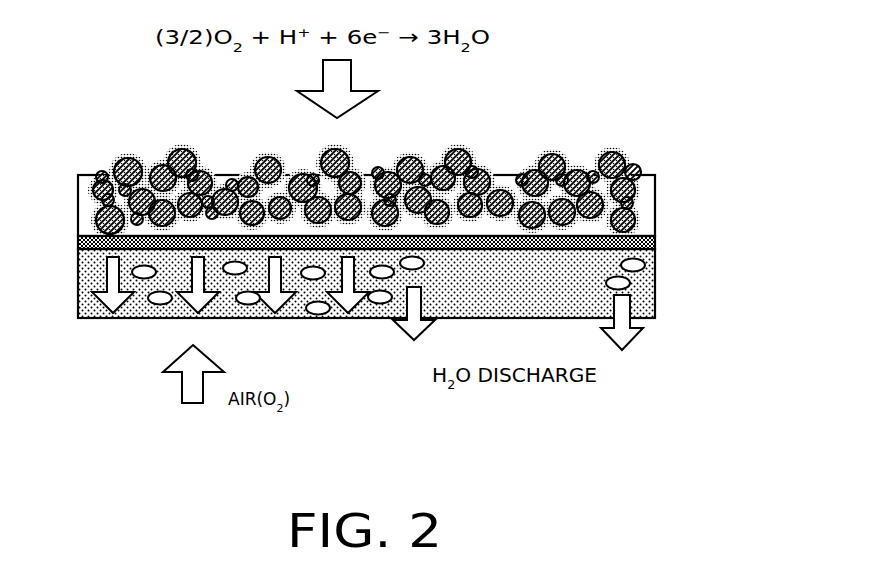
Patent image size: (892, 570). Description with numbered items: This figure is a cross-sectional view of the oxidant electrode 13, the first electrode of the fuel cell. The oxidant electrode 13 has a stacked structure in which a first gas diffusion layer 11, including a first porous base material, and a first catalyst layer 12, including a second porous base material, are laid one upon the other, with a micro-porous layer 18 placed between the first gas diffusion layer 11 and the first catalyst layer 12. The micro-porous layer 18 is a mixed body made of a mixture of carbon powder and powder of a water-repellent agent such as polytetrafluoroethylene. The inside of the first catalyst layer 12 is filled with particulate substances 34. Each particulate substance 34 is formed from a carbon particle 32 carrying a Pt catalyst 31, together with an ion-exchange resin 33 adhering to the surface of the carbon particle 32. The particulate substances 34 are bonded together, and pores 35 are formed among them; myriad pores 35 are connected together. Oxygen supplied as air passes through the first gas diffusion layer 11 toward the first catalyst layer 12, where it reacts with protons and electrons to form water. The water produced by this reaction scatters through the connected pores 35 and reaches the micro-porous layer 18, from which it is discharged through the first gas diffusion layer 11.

The first gas diffusion layer 11 is at (395, 299).
The first catalyst layer 12 is at (395, 138).
The oxidant electrode 13 is at (429, 194).
The micro-porous layer 18 is at (654, 240).
The Pt catalyst 31 is at (656, 134).
The carbon particle 32 is at (612, 160).
The ion-exchange resin 33 is at (592, 157).
The particulate substance 34 is at (631, 110).
The pore 35 is at (543, 160).